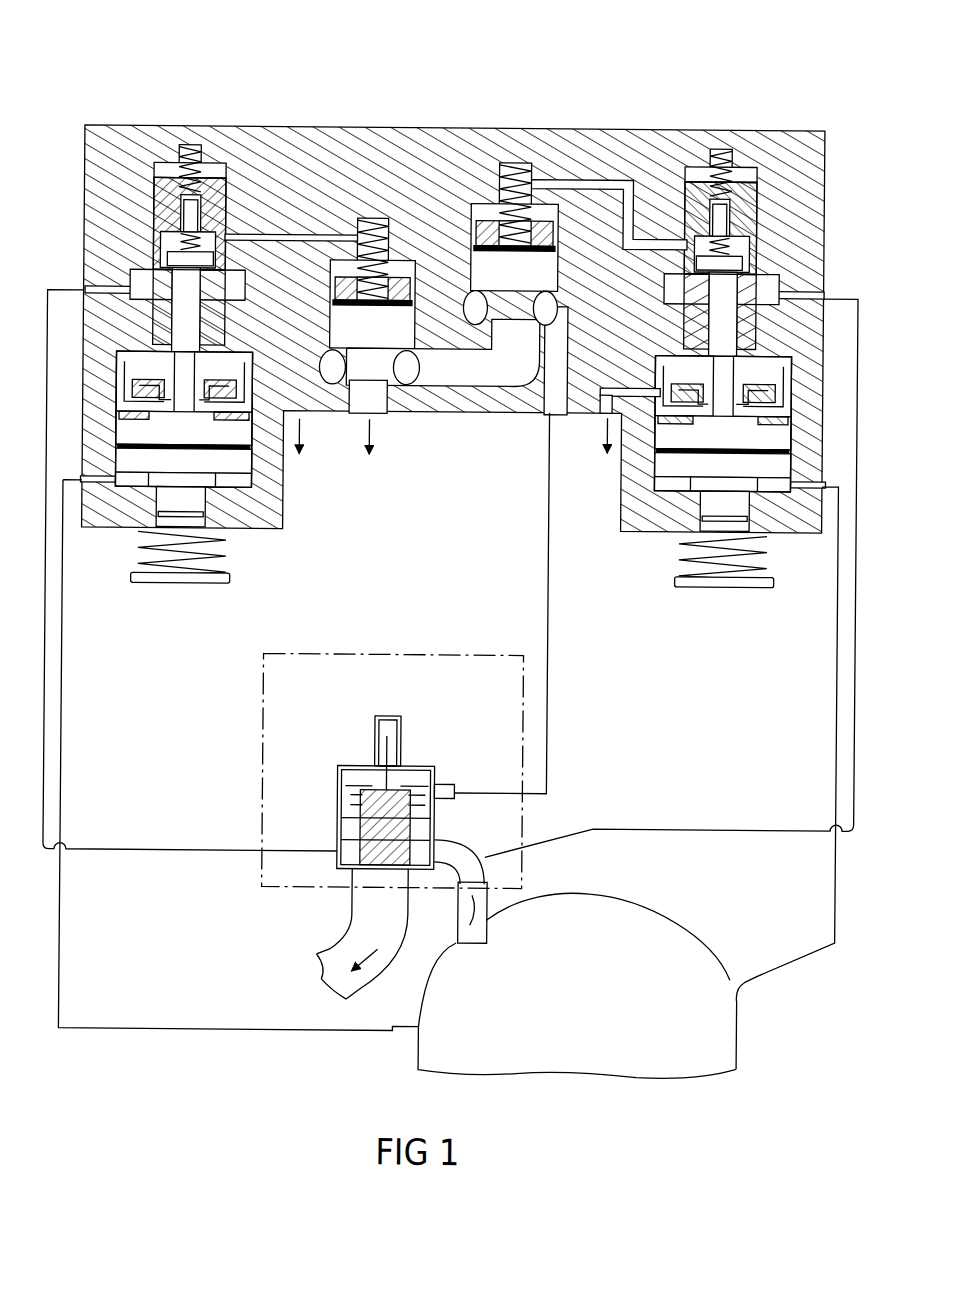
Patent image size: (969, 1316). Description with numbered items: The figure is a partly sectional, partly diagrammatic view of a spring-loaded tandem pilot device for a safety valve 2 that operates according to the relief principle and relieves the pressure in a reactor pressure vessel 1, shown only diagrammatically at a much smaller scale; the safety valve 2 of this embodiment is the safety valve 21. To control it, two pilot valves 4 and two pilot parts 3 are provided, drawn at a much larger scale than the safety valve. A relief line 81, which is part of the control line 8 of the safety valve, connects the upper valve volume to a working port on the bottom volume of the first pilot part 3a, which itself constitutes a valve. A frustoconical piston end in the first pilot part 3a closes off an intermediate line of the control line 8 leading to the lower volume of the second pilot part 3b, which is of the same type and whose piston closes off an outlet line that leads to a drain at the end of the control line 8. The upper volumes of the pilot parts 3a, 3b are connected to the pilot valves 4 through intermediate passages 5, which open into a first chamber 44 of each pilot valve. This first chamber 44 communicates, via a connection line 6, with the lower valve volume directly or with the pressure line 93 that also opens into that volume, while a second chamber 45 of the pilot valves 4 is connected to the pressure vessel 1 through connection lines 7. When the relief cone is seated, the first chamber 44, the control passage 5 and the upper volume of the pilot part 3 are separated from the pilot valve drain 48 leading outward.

The pressure vessel 1 is at (726, 1034).
The safety valve 2 is at (502, 653).
The pilot parts 3 is at (543, 41).
The first pilot part 3a is at (510, 158).
The second pilot part 3b is at (373, 214).
The pilot valves 4 is at (148, 159).
The intermediate passages 5 is at (288, 238).
The connection line 6 is at (60, 292).
The connection lines 7 is at (835, 866).
The control line 8 is at (546, 436).
The safety valve 21 is at (414, 756).
The first chamber 44 is at (235, 233).
The second chamber 45 is at (133, 467).
The pilot valve drain 48 is at (597, 410).
The relief line 81 is at (550, 681).
The pressure line 93 is at (470, 944).